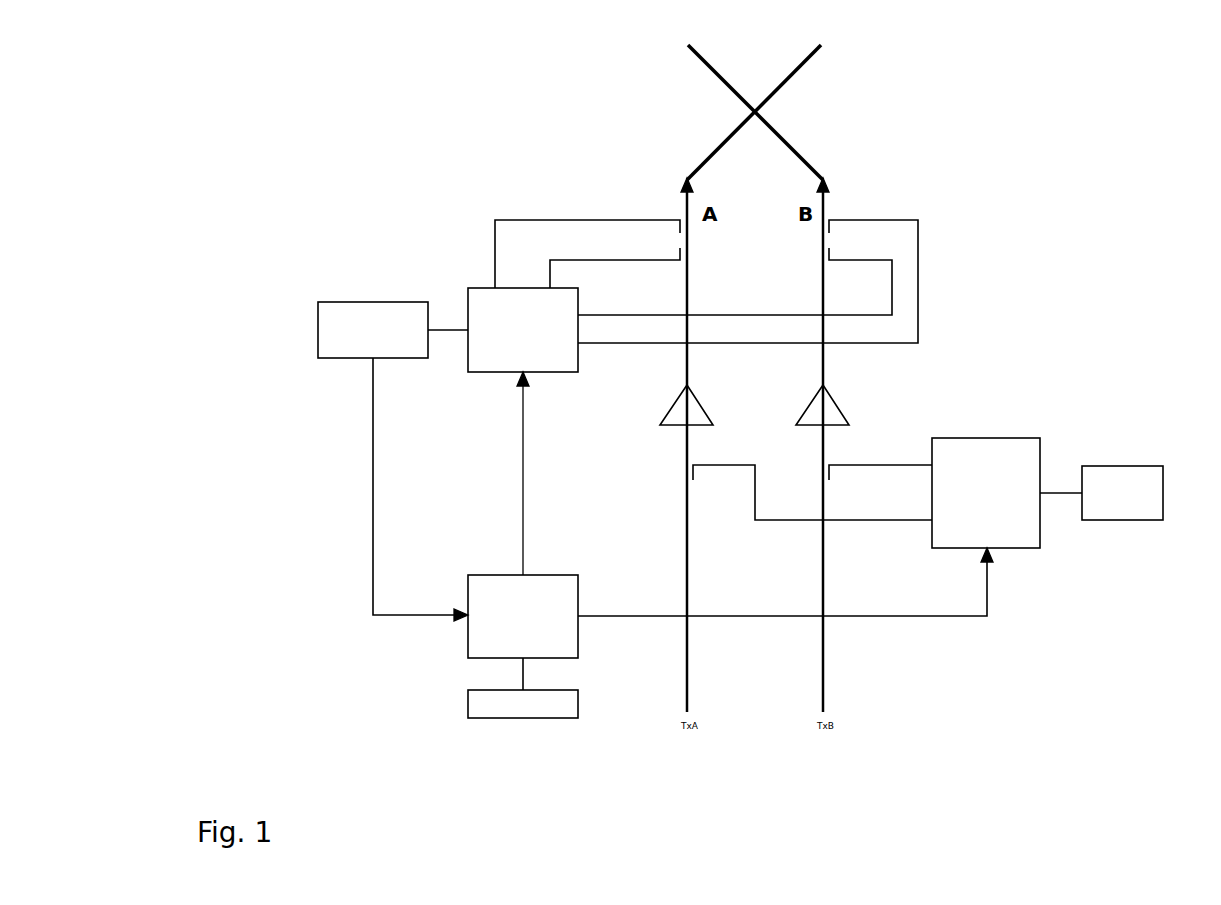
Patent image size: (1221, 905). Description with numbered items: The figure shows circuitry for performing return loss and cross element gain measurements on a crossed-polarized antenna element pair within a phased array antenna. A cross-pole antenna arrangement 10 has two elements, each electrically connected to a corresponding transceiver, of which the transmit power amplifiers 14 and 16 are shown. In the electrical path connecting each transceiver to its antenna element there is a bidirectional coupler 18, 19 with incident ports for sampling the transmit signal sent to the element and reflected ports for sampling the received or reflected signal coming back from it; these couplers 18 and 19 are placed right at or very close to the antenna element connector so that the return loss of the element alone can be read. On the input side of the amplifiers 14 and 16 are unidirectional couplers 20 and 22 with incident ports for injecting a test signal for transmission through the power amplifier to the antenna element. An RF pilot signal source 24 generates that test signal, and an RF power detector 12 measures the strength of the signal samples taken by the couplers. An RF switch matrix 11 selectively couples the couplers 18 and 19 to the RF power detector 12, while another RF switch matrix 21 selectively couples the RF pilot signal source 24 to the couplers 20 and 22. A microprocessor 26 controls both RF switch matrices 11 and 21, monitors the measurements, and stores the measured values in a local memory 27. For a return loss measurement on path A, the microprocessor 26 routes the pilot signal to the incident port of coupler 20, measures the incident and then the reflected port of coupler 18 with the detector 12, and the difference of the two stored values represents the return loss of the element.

The cross-pole antenna arrangement 10 is at (708, 112).
The RF switch matrix 11 is at (478, 372).
The RF power detector 12 is at (342, 302).
The transmit power amplifier 14 is at (673, 425).
The transmit power amplifier 16 is at (833, 412).
The bidirectional coupler 18 is at (670, 239).
The bidirectional coupler 19 is at (841, 238).
The unidirectional coupler 20 is at (715, 500).
The RF switch matrix 21 is at (1013, 438).
The unidirectional coupler 22 is at (800, 445).
The RF pilot signal source 24 is at (1162, 522).
The microprocessor 26 is at (482, 575).
The local memory 27 is at (468, 705).